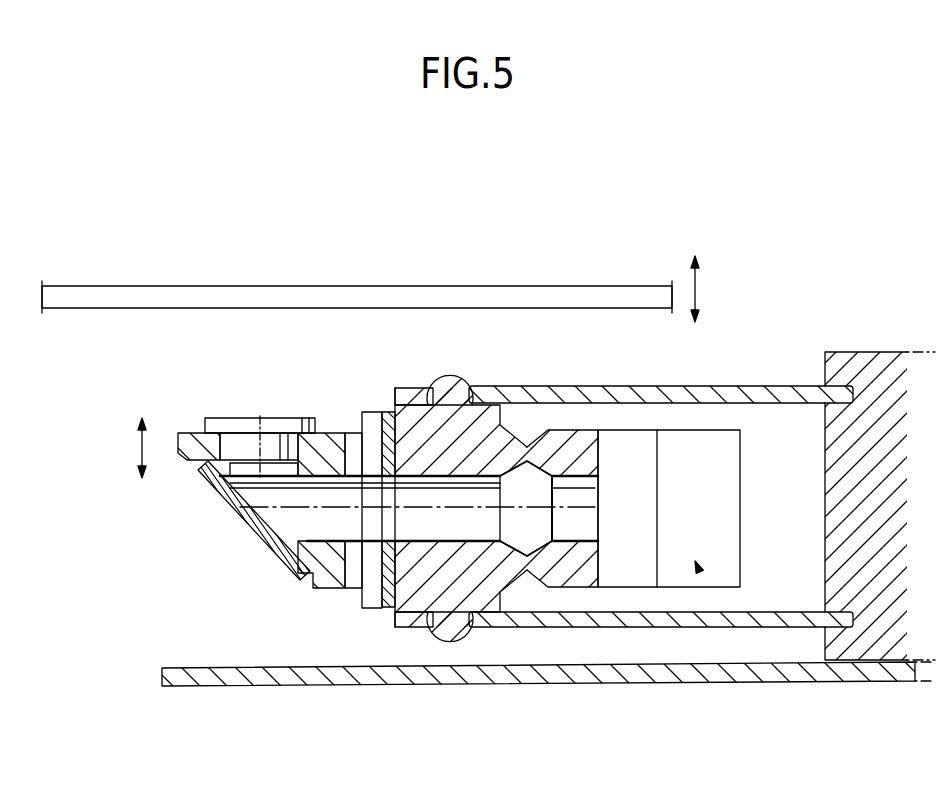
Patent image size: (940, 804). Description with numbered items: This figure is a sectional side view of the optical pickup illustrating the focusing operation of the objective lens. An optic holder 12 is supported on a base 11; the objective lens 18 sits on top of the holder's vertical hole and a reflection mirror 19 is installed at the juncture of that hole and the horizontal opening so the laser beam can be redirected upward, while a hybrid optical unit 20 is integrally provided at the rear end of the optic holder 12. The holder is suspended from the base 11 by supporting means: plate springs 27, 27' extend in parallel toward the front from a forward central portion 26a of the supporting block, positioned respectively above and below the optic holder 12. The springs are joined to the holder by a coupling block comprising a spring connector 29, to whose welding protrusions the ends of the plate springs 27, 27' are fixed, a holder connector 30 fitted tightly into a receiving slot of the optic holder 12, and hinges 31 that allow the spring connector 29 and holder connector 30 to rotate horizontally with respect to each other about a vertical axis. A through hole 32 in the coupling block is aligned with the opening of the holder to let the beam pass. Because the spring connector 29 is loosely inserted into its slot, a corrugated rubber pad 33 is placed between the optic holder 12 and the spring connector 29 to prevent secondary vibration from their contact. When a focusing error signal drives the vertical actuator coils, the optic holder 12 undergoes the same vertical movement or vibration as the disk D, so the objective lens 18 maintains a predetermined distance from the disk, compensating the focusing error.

The base 11 is at (286, 670).
The optic holder 12 is at (177, 461).
The objective lens 18 is at (238, 418).
The reflection mirror 19 is at (243, 527).
The hybrid optical unit 20 is at (697, 565).
The forward central portion 26a is at (877, 352).
The plate spring 27 is at (661, 364).
The plate spring 27' is at (661, 581).
The spring connector 29 is at (470, 600).
The holder connector 30 is at (583, 577).
The hinges 31 is at (543, 437).
The through hole 32 is at (598, 480).
The corrugated rubber pad 33 is at (370, 412).
The disk D is at (548, 286).